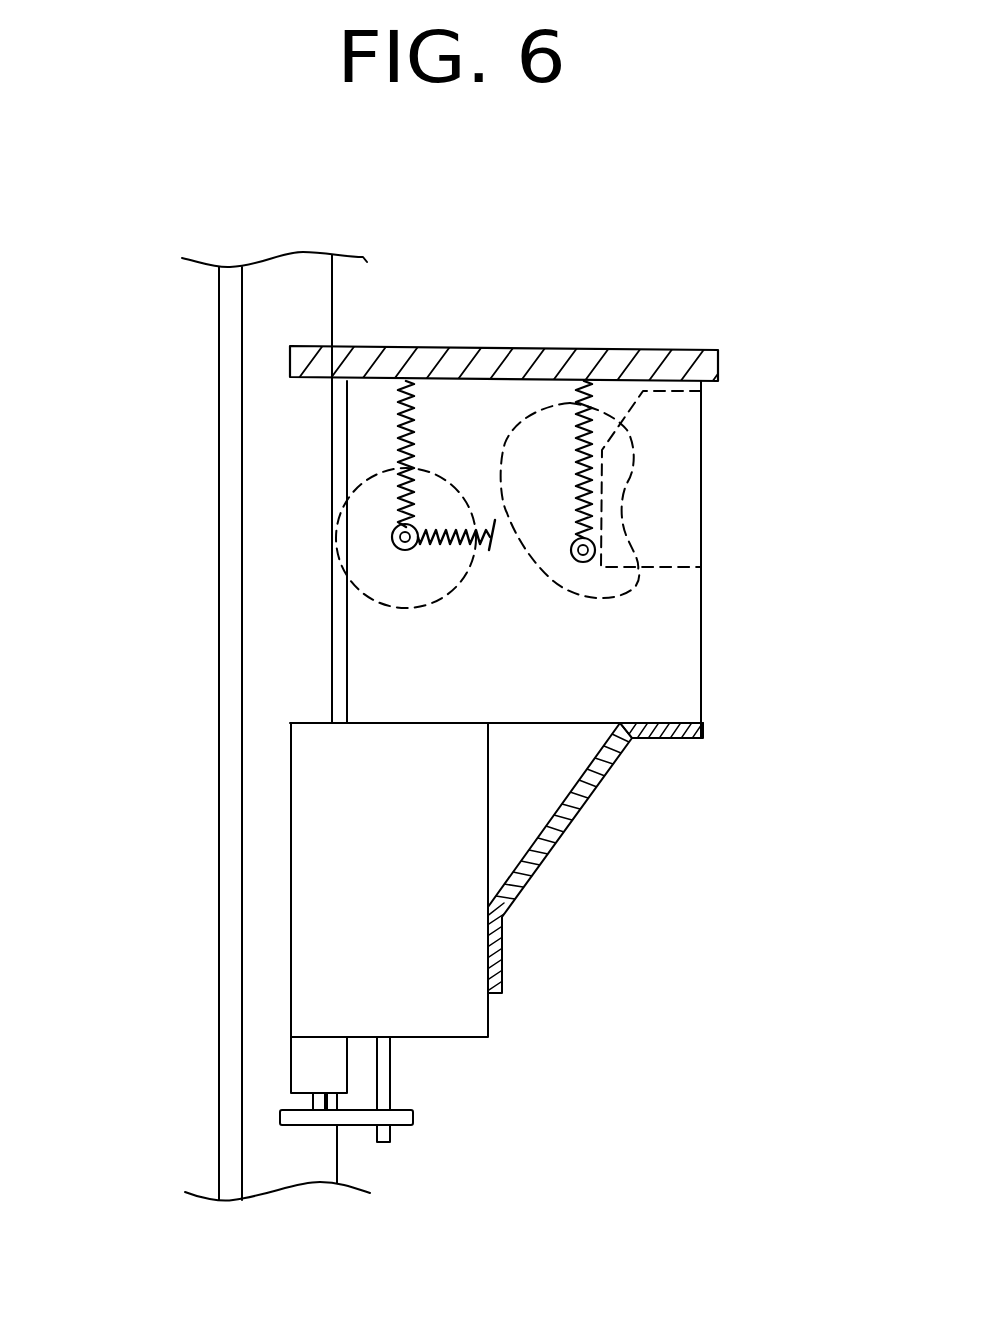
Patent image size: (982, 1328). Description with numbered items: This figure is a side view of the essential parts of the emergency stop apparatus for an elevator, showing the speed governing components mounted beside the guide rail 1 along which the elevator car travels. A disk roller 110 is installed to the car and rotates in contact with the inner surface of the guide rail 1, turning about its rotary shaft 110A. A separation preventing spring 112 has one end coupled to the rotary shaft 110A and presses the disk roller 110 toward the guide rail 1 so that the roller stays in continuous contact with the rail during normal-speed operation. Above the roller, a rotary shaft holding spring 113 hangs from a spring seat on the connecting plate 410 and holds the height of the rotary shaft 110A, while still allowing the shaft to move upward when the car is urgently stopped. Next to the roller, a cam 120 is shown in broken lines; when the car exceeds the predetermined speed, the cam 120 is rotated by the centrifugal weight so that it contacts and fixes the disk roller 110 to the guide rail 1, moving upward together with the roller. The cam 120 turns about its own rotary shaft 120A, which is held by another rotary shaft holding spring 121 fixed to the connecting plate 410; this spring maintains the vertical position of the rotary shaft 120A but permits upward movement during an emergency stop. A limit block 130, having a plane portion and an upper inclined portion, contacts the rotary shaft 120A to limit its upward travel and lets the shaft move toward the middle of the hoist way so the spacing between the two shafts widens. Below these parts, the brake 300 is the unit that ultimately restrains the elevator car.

The guide rail 1 is at (270, 440).
The disk roller 110 is at (362, 597).
The rotary shaft of the disk roller 110A is at (392, 538).
The separation preventing spring 112 is at (455, 530).
The rotary shaft holding spring 113 is at (405, 381).
The cam 120 is at (582, 380).
The rotary shaft of the cam 120A is at (595, 553).
The rotary shaft holding spring 121 is at (593, 485).
The limit block 130 is at (675, 448).
The brake 300 is at (290, 905).
The connecting plate 410 is at (698, 350).